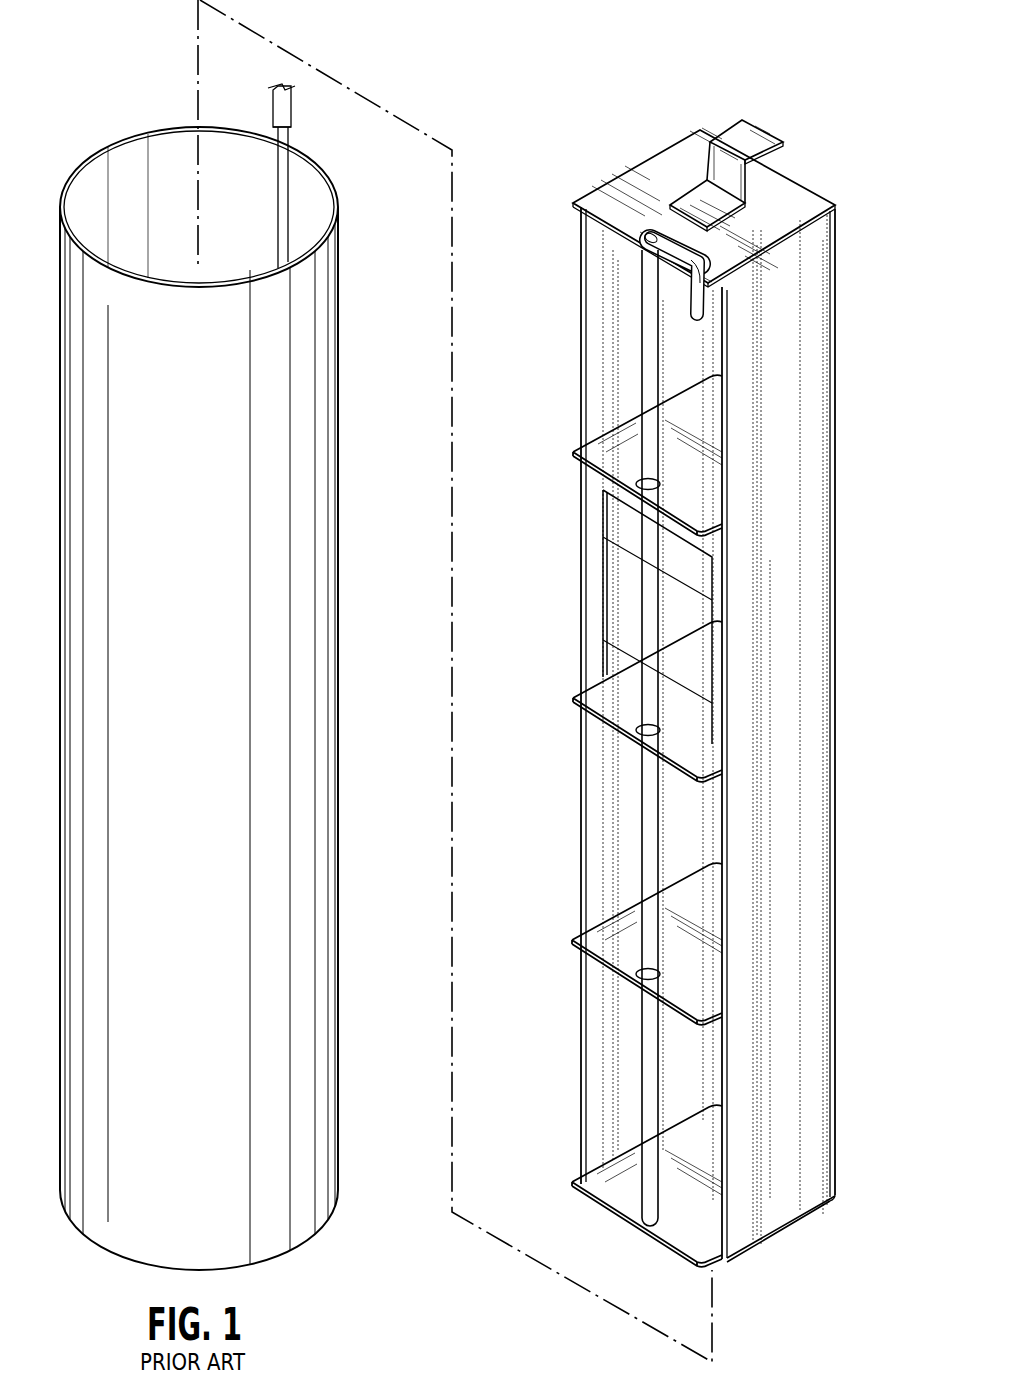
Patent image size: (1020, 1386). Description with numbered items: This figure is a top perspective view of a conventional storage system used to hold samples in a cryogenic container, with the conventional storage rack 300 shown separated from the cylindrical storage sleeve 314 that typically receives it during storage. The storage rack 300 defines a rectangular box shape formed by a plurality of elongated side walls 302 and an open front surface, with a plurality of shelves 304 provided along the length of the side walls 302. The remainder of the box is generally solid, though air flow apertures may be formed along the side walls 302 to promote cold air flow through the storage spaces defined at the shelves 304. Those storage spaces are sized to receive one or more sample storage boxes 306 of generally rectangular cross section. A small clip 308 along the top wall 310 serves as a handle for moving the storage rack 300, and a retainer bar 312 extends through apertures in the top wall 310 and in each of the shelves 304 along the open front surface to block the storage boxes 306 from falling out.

The storage rack 300 is at (830, 163).
The elongated side walls 302 is at (722, 345).
The shelves 304 is at (712, 494).
The sample storage boxes 306 is at (626, 598).
The clip 308 is at (752, 127).
The top wall 310 is at (647, 167).
The retainer bar 312 is at (647, 407).
The cylindrical storage sleeve 314 is at (116, 142).